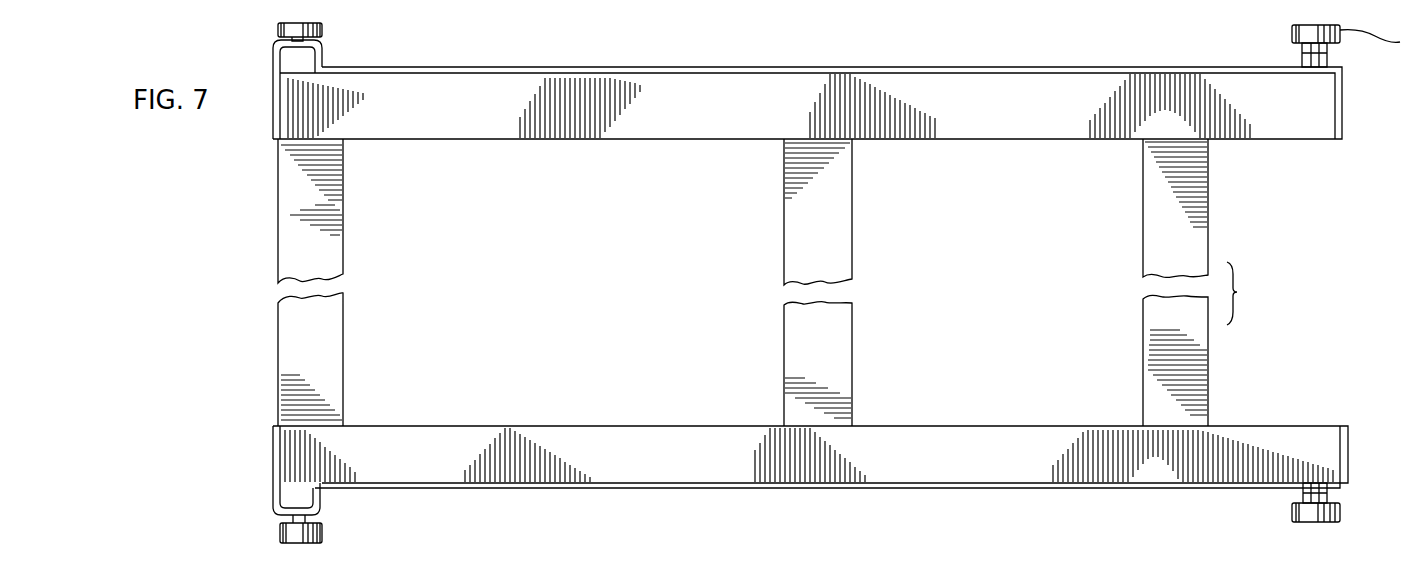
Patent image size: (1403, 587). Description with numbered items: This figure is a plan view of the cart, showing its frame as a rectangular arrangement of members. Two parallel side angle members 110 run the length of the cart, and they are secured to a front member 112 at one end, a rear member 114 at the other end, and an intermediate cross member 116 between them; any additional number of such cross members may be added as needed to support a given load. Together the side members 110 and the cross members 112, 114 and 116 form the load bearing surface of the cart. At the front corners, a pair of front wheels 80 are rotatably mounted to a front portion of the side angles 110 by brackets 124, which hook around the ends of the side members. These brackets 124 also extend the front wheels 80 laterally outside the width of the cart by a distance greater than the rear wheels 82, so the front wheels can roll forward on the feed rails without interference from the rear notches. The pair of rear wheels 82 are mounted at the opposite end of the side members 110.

The side angle members 110 is at (716, 68).
The front member 112 is at (287, 187).
The rear member 114 is at (1198, 238).
The cross members 116 is at (843, 258).
The brackets 124 is at (320, 52).
The front wheels 80 is at (280, 32).
The rear wheels 82 is at (1292, 512).